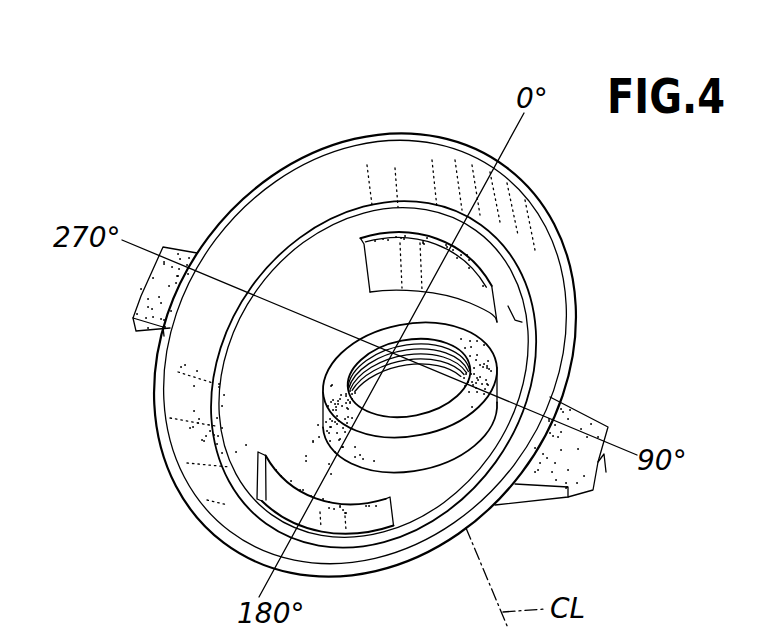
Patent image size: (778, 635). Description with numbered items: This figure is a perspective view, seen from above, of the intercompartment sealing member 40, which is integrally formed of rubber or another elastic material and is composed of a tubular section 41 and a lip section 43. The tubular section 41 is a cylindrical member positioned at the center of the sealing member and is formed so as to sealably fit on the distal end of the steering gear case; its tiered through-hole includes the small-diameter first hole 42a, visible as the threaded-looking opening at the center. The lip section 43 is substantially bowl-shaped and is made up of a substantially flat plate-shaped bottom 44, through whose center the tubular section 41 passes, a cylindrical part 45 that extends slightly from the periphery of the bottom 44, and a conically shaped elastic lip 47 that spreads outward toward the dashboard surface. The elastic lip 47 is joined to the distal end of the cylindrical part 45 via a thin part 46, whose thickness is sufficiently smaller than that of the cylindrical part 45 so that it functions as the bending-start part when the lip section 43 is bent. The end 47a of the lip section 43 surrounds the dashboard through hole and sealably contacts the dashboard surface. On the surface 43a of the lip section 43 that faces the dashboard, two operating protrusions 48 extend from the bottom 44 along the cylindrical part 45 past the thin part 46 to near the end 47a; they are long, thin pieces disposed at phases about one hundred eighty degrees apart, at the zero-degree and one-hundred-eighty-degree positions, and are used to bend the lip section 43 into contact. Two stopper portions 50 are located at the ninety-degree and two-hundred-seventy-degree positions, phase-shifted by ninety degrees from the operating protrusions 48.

The intercompartment sealing member 40 is at (580, 319).
The tubular section 41 is at (442, 452).
The first hole 42a is at (377, 426).
The lip section 43 is at (398, 62).
The surface of the lip section 43a is at (188, 447).
The bottom 44 is at (343, 287).
The cylindrical part 45 is at (313, 260).
The thin part 46 is at (282, 273).
The elastic lip 47 is at (237, 248).
The end of the lip section 47a is at (207, 250).
The operating protrusion 48 is at (520, 240).
The stopper portion 50 is at (138, 296).